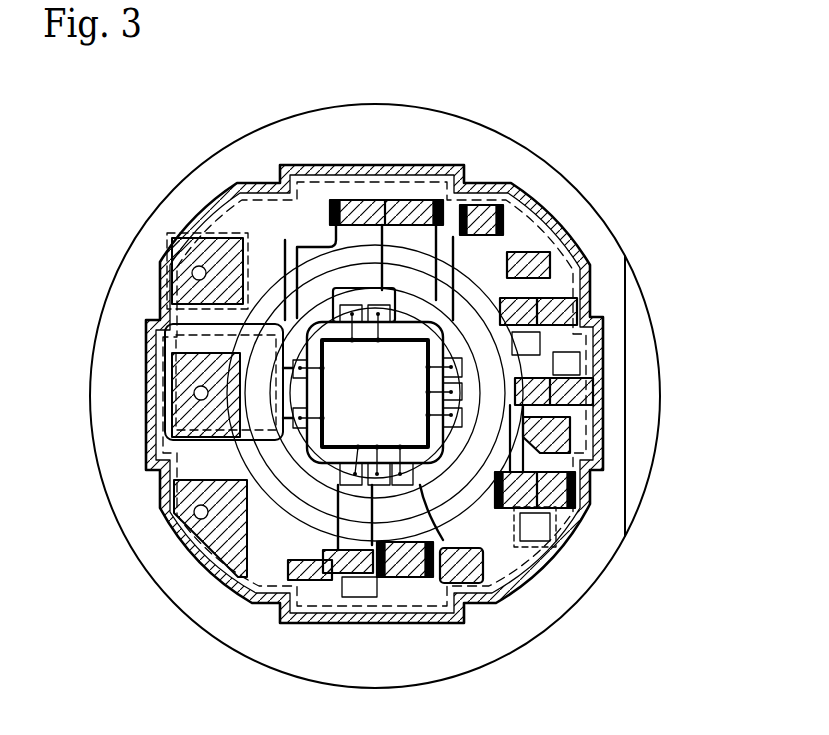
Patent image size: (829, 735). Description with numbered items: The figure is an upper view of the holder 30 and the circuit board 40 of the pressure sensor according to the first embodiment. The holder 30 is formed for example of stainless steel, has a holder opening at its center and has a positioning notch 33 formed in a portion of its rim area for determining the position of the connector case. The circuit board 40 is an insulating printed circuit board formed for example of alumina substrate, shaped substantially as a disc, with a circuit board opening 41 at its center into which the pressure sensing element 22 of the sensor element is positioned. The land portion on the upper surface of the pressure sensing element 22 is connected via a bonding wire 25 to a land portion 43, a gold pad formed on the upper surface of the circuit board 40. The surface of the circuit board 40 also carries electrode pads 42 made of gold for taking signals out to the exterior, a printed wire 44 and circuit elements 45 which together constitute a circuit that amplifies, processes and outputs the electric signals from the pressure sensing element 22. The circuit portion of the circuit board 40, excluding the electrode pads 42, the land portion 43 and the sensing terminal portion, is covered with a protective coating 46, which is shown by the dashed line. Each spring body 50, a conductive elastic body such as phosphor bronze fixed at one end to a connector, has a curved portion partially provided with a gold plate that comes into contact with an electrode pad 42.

The pressure sensing element 22 is at (250, 535).
The bonding wire 25 is at (378, 340).
The holder 30 is at (541, 172).
The positioning notch 33 is at (628, 386).
The circuit board 40 is at (590, 226).
The circuit board opening 41 is at (321, 339).
The electrode pads 42 is at (173, 272).
The land portion 43 is at (346, 489).
The printed wire 44 is at (405, 200).
The circuit elements 45 is at (485, 210).
The protective coating 46 is at (515, 583).
The spring body 50 is at (316, 240).